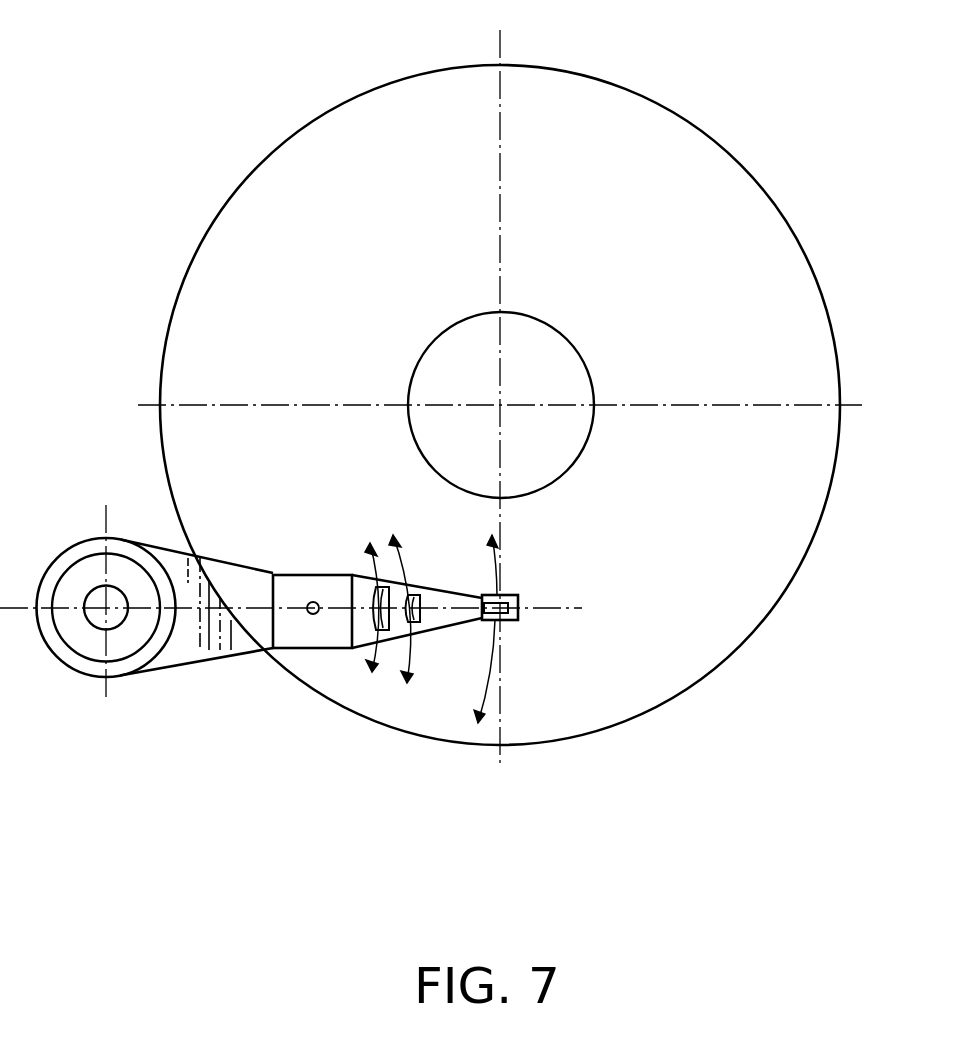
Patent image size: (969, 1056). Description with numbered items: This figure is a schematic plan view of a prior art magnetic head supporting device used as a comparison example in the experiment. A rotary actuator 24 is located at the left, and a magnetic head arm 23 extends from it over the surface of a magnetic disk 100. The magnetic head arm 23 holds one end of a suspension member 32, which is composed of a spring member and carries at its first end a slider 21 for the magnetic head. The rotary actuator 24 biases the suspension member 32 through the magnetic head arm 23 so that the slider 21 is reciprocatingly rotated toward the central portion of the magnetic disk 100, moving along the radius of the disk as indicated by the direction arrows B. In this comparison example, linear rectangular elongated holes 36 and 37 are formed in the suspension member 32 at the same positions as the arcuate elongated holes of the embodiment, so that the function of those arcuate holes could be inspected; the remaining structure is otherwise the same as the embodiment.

The magnetic disk 100 is at (615, 125).
The rotary actuator 24 is at (80, 655).
The magnetic head arm 23 is at (202, 643).
The suspension member 32 is at (443, 618).
The linear elongated hole 36 is at (373, 600).
The linear elongated hole 37 is at (417, 595).
The slider 21 is at (520, 620).
The movement direction B is at (480, 725).